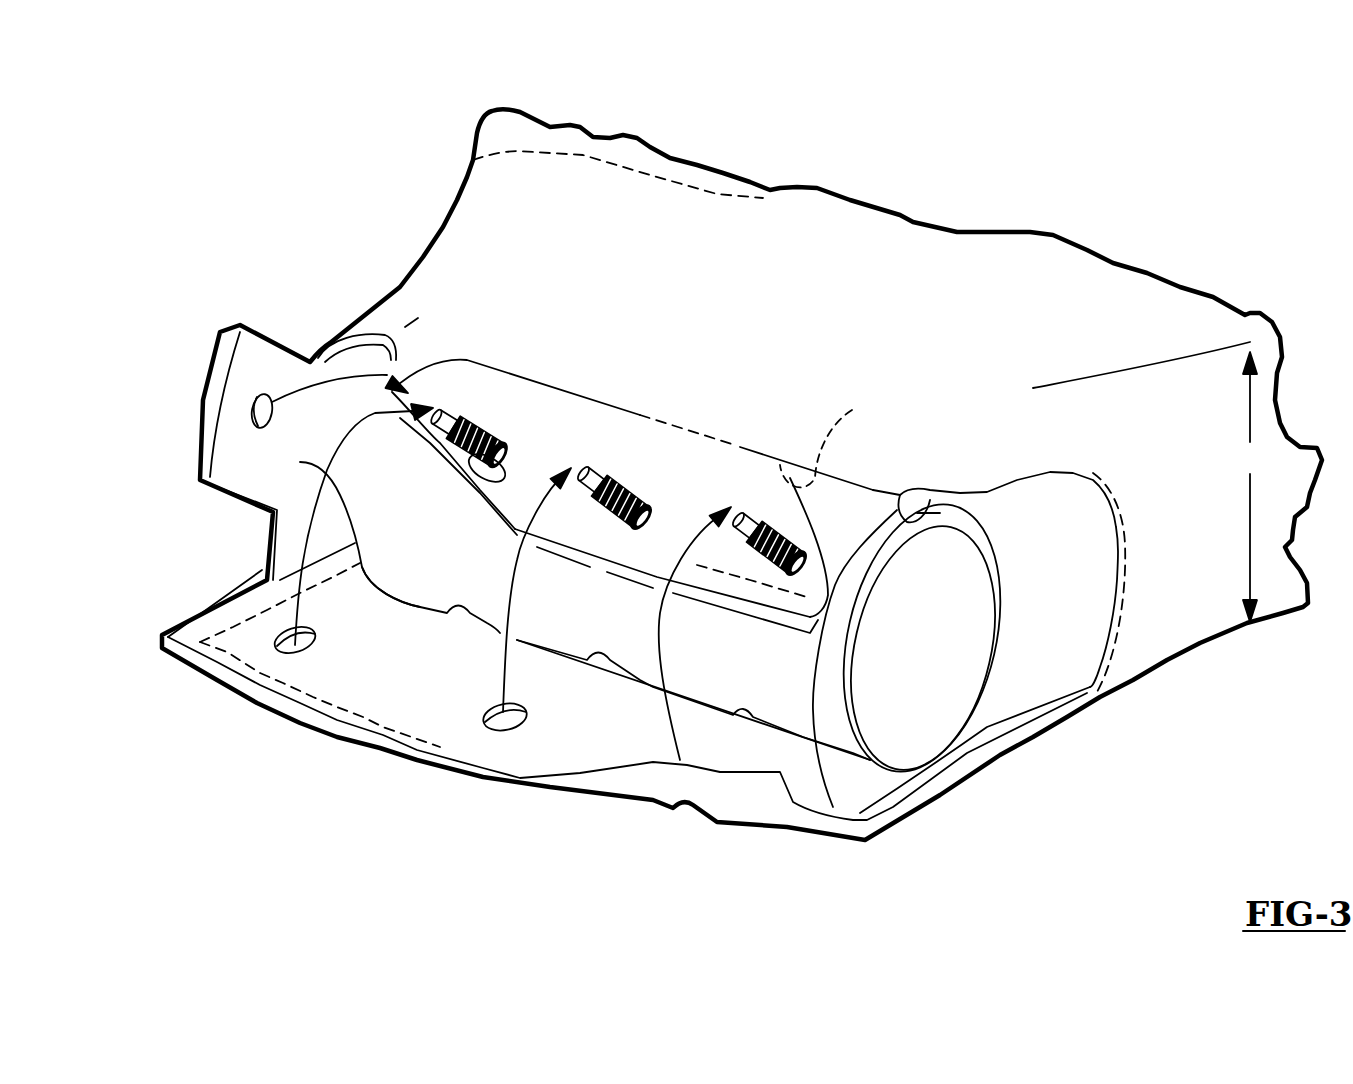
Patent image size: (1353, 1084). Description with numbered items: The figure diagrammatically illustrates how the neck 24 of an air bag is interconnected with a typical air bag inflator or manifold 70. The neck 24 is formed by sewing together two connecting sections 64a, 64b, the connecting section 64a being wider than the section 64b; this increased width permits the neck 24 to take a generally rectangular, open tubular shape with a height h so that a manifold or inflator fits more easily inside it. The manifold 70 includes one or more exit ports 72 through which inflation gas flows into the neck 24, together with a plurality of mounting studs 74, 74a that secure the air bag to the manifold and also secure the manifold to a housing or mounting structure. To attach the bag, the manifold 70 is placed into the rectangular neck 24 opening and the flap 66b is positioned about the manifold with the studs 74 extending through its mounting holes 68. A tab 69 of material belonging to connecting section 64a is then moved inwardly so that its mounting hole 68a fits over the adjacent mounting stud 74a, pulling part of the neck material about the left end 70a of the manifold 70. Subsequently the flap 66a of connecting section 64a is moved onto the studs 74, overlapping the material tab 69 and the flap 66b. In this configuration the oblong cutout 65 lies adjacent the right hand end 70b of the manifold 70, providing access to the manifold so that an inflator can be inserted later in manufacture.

The neck 24 is at (440, 251).
The connecting section 64a is at (418, 730).
The connecting section 64b is at (565, 412).
The oblong cutout 65 is at (1125, 540).
The flap 66a is at (343, 683).
The flap 66b is at (813, 585).
The mounting holes 68 is at (483, 470).
The mounting hole 68a is at (252, 414).
The tab 69 is at (263, 357).
The manifold 70 is at (194, 325).
The left end 70a is at (380, 388).
The right hand end 70b is at (833, 705).
The exit ports 72 is at (850, 412).
The mounting studs 74 is at (744, 512).
The mounting stud 74a is at (463, 425).
The height h is at (1248, 487).